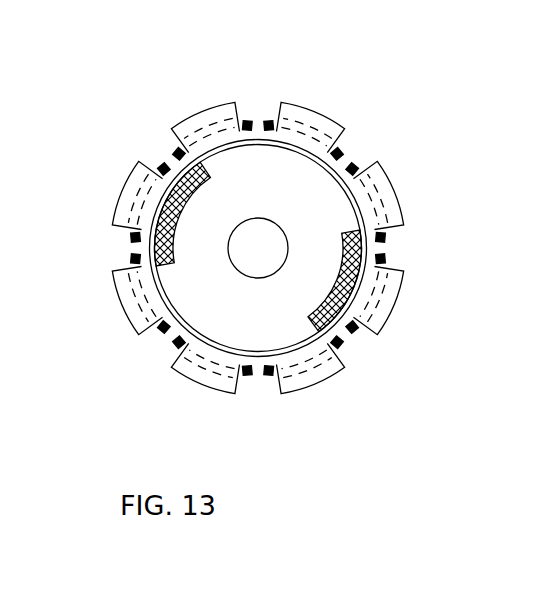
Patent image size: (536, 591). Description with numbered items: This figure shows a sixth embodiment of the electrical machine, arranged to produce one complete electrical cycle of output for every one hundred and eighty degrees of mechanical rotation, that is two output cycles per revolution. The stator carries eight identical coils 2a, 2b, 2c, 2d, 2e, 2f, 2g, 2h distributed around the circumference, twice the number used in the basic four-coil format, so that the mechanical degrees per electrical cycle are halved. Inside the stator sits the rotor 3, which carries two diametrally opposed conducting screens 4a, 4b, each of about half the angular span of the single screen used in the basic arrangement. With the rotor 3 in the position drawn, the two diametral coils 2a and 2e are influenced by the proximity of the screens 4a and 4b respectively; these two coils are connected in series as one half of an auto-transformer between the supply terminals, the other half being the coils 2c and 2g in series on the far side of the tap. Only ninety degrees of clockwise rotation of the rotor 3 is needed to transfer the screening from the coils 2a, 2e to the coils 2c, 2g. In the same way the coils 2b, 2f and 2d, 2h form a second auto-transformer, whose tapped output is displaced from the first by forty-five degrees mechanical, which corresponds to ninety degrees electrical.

The coil 2a is at (115, 227).
The coil 2b is at (158, 138).
The coil 2c is at (261, 105).
The coil 2d is at (366, 144).
The coil 2e is at (407, 248).
The coil 2f is at (355, 363).
The coil 2g is at (253, 388).
The coil 2h is at (145, 351).
The rotor 3 is at (297, 149).
The conducting screen 4a is at (157, 192).
The conducting screen 4b is at (354, 302).